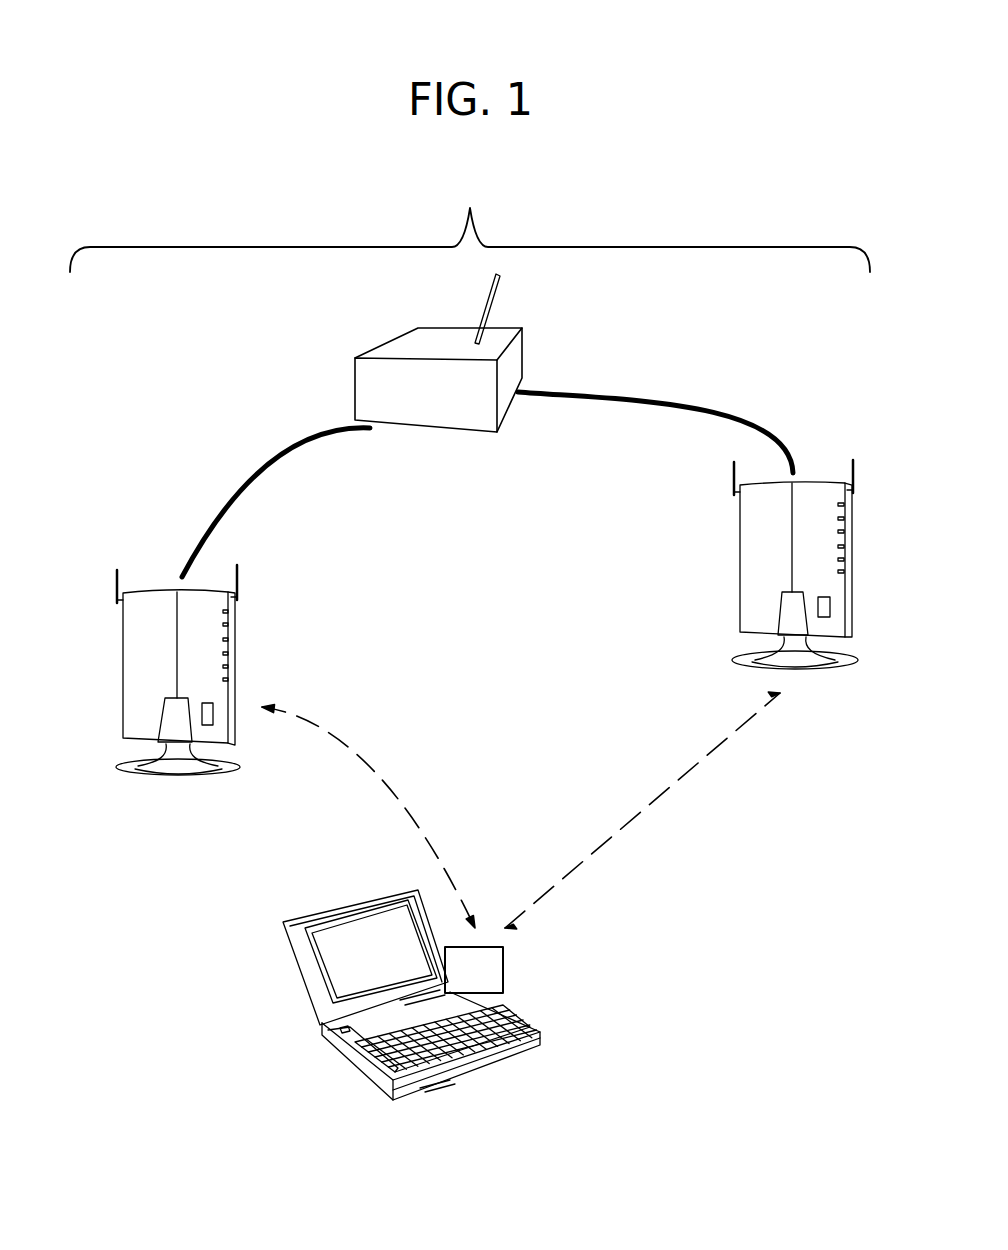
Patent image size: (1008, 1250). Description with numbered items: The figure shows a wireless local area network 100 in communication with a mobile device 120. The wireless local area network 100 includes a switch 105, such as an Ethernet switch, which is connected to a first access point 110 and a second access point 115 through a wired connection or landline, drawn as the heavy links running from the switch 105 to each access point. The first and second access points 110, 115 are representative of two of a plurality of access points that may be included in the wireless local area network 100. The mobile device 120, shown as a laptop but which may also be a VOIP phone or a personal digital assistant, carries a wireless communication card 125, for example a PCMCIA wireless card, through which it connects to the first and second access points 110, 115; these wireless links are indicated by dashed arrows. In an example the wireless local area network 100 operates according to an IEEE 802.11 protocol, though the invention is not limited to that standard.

The wireless local area network 100 is at (470, 223).
The switch 105 is at (390, 345).
The first access point 110 is at (233, 670).
The second access point 115 is at (740, 568).
The mobile device 120 is at (350, 905).
The wireless communication card 125 is at (503, 968).